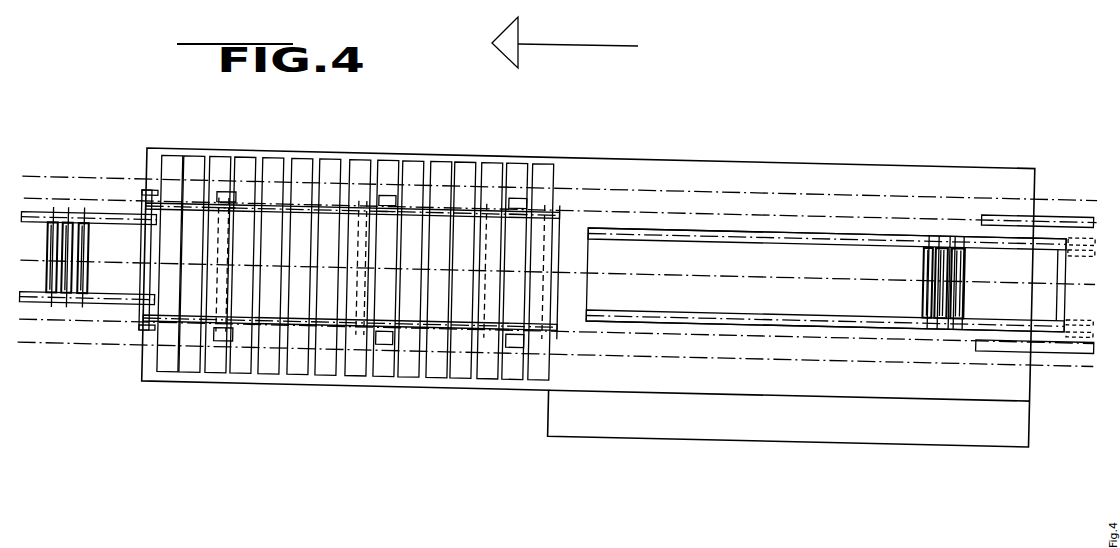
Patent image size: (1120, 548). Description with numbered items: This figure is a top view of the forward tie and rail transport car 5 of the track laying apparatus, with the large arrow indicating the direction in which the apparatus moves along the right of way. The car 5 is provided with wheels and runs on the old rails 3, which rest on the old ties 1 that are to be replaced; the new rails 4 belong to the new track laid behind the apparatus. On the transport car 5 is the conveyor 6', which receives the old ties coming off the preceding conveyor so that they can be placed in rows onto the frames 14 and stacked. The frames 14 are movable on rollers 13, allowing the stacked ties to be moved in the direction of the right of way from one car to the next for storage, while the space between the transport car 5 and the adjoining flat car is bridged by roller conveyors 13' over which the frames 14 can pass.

The old ties 1 is at (438, 369).
The old rails 3 is at (75, 199).
The new rails 4 is at (108, 176).
The forward transport car 5 is at (355, 382).
The conveyor 6' is at (938, 361).
The rollers 13 is at (371, 307).
The roller conveyors 13' is at (88, 292).
The frames 14 is at (155, 330).